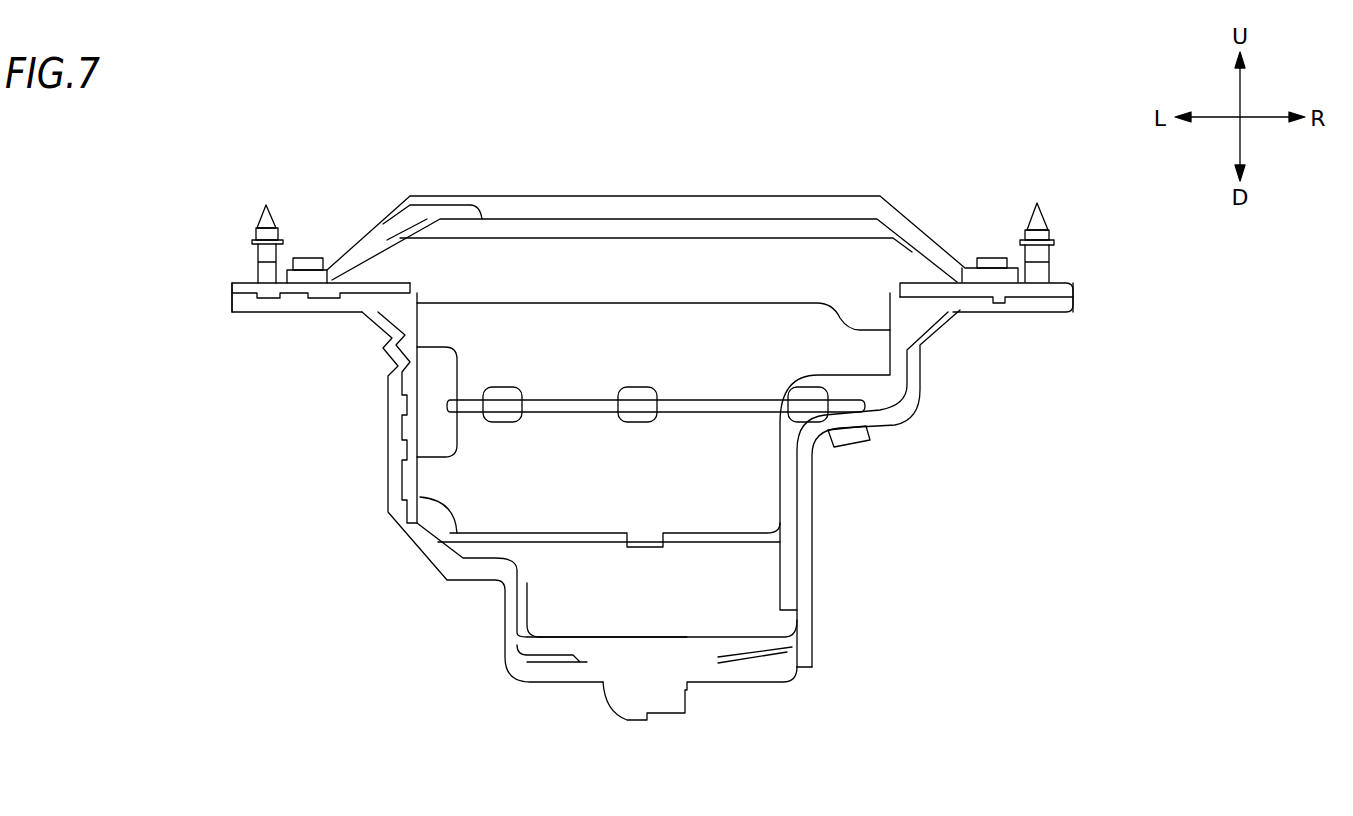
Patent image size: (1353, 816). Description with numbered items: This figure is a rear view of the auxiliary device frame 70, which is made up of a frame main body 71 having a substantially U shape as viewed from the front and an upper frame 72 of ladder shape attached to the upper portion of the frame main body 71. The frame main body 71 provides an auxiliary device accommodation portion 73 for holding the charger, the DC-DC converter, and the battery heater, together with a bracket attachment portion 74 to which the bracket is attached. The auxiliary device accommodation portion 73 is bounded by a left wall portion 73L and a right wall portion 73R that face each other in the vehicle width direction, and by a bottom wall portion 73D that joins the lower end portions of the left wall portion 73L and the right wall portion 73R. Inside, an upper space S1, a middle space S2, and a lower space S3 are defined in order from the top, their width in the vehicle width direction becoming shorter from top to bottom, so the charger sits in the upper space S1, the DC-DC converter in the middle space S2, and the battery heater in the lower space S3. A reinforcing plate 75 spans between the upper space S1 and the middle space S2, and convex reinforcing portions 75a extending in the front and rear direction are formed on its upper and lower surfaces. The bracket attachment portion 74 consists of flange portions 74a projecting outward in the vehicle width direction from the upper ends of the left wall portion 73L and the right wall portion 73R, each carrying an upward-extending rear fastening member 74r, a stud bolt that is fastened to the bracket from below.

The auxiliary device frame 70 is at (904, 136).
The frame main body 71 is at (383, 578).
The upper frame 72 is at (637, 195).
The auxiliary device accommodation portion 73 is at (815, 645).
The left wall portion 73L is at (388, 462).
The right wall portion 73R is at (805, 553).
The bottom wall portion 73D is at (688, 662).
The bracket attachment portion 74 is at (318, 305).
The flange portion 74a is at (240, 293).
The rear fastening member 74r is at (262, 253).
The reinforcing plate 75 is at (583, 407).
The reinforcing portion 75a is at (497, 423).
The upper space S1 is at (490, 338).
The middle space S2 is at (713, 488).
The lower space S3 is at (758, 598).